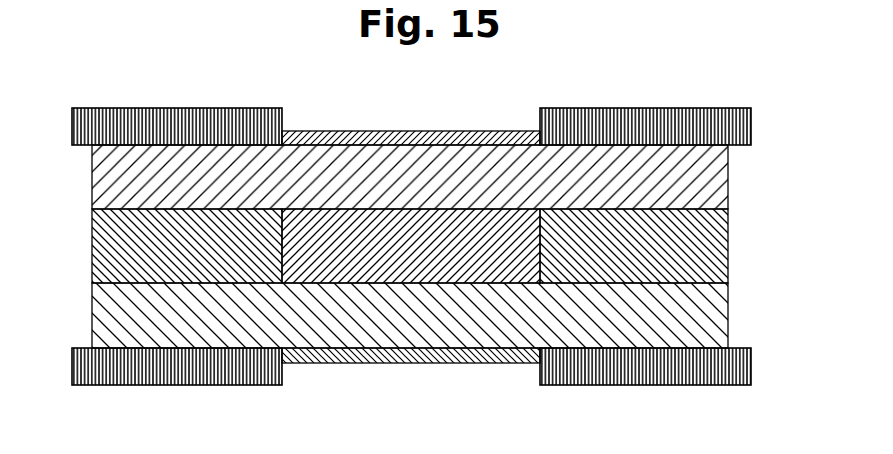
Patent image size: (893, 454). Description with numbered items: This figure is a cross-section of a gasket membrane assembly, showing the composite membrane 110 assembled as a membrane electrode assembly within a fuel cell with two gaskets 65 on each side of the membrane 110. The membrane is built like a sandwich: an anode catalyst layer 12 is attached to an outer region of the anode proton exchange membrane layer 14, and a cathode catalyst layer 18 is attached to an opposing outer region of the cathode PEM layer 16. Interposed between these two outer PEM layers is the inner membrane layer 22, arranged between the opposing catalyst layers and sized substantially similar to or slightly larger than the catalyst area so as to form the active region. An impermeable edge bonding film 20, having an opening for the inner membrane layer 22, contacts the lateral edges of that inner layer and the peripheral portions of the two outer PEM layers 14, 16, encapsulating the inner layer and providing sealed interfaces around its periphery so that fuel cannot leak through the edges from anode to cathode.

The membrane 110 is at (666, 52).
The anode catalyst layer 12 is at (447, 131).
The anode proton exchange membrane layer 14 is at (712, 180).
The cathode PEM layer 16 is at (703, 342).
The cathode catalyst layer 18 is at (473, 365).
The edge bonding film 20 is at (92, 227).
The inner membrane layer 22 is at (410, 267).
The gasket 65 is at (195, 108).